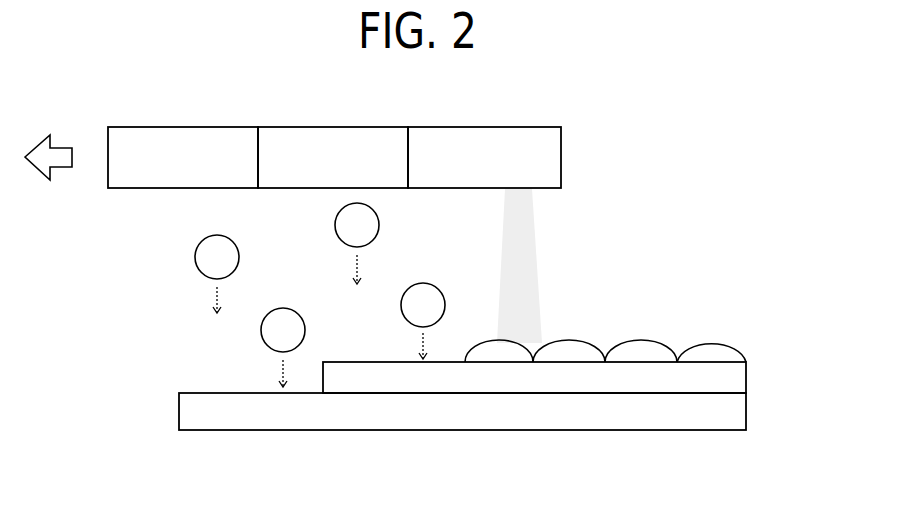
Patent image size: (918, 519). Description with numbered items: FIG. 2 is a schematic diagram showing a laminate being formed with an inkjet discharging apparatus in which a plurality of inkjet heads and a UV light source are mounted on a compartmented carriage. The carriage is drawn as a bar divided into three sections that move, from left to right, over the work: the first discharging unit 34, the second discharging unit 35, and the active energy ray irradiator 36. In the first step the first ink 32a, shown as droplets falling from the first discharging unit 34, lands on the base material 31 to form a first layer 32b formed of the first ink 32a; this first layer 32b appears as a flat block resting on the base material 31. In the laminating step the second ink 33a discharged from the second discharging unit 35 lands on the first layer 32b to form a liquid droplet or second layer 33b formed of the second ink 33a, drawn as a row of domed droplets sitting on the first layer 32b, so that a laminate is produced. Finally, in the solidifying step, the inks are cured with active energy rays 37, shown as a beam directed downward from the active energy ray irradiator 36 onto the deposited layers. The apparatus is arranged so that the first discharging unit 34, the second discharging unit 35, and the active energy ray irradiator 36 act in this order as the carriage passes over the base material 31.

The base material 31 is at (560, 413).
The first ink 32a is at (283, 321).
The first layer 32b is at (732, 378).
The second ink 33a is at (424, 296).
The second layer 33b is at (572, 340).
The first discharging unit 34 is at (182, 143).
The second discharging unit 35 is at (339, 143).
The active energy ray irradiator 36 is at (484, 143).
The active energy rays 37 is at (530, 218).